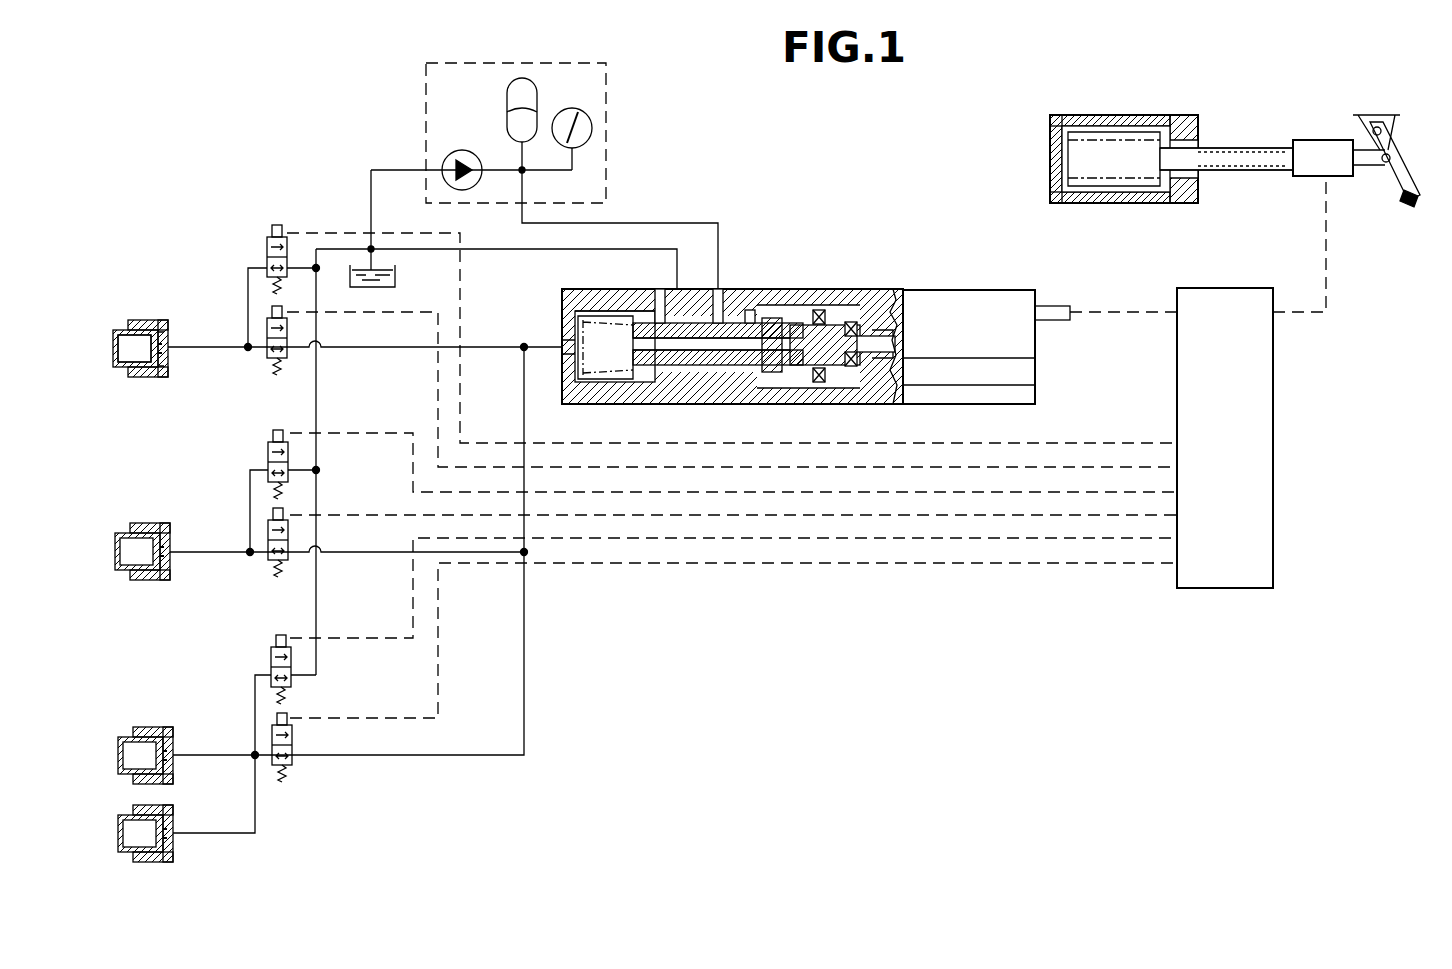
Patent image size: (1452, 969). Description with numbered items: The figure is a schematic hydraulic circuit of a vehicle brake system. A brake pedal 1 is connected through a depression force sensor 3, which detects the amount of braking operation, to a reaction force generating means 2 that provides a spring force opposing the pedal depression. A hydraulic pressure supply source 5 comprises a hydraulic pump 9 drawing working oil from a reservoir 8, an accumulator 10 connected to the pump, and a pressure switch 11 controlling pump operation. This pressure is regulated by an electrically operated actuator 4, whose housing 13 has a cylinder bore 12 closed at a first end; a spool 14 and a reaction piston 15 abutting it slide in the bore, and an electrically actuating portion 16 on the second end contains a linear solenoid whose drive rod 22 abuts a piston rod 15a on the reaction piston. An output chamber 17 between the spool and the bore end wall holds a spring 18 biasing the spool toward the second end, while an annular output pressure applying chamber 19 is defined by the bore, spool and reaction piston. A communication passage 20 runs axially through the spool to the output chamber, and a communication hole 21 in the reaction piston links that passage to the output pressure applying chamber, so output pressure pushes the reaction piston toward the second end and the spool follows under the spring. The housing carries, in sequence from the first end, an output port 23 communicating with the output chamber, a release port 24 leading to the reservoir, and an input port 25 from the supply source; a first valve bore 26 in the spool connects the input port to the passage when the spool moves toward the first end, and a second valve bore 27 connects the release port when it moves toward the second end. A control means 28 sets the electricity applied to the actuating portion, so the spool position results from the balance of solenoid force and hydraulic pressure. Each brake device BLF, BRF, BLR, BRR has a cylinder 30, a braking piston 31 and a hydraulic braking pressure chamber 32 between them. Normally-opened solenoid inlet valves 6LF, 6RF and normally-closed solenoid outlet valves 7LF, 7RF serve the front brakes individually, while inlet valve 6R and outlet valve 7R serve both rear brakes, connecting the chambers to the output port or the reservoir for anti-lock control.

The brake pedal 1 is at (1420, 195).
The reaction force generating means 2 is at (1096, 112).
The depression force sensor 3 is at (1300, 140).
The electrically operated actuator 4 is at (729, 337).
The hydraulic pressure supply source 5 is at (606, 152).
The normally-opened type solenoid inlet valve 6LF is at (267, 360).
The normally-opened type solenoid inlet valve 6RF is at (268, 562).
The normally-opened type solenoid inlet valve 6R is at (292, 765).
The normally-closed type solenoid outlet valve 7LF is at (264, 250).
The normally-closed type solenoid outlet valve 7RF is at (268, 452).
The normally-closed type solenoid outlet valve 7R is at (271, 660).
The reservoir 8 is at (395, 276).
The hydraulic pump 9 is at (476, 150).
The accumulator 10 is at (507, 100).
The pressure switch 11 is at (567, 108).
The cylinder bore 12 is at (724, 366).
The housing 13 is at (880, 300).
The spool 14 is at (770, 374).
The reaction piston 15 is at (806, 384).
The piston rod 15a is at (878, 360).
The electrically actuating portion 16 is at (984, 339).
The output chamber 17 is at (575, 366).
The spring 18 is at (606, 296).
The annular output pressure applying chamber 19 is at (778, 300).
The communication passage 20 is at (636, 385).
The communication hole 21 is at (842, 312).
The drive rod 22 is at (893, 336).
The output port 23 is at (562, 340).
The release port 24 is at (664, 296).
The input port 25 is at (710, 296).
The first valve bore 26 is at (750, 308).
The second valve bore 27 is at (678, 366).
The control means 28 is at (1228, 435).
The cylinder 30 is at (158, 322).
The braking piston 31 is at (118, 372).
The hydraulic braking pressure chamber 32 is at (162, 372).
The left front wheel brake device BLF is at (131, 337).
The right front wheel brake device BRF is at (140, 520).
The left rear wheel brake device BLR is at (147, 720).
The right rear wheel brake device BRR is at (118, 850).